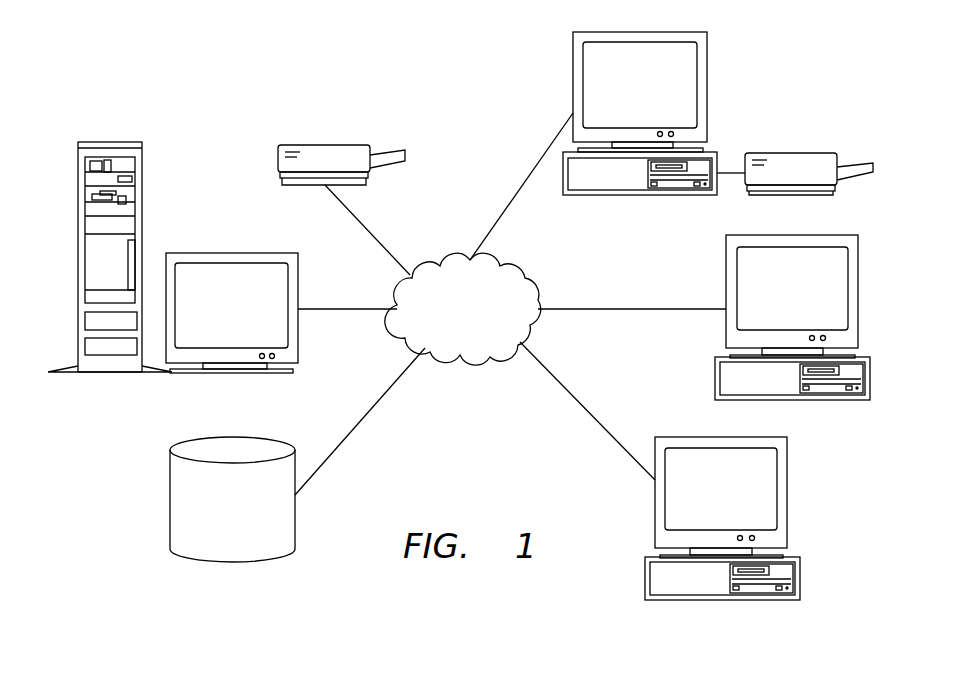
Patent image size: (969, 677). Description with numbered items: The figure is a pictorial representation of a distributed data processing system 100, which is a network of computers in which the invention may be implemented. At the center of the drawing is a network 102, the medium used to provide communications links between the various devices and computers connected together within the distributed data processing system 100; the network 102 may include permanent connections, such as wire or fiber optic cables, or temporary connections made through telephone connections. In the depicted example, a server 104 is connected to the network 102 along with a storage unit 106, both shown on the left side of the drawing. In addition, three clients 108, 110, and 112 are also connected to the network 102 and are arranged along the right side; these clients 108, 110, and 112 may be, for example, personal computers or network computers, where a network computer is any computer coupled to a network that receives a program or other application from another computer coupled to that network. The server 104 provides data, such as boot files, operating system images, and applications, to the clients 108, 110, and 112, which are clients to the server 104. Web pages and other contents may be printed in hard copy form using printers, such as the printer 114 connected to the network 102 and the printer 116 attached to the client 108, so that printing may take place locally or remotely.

The distributed data processing system 100 is at (447, 126).
The network 102 is at (447, 334).
The server 104 is at (213, 315).
The storage unit 106 is at (213, 537).
The client 108 is at (621, 97).
The client 110 is at (773, 302).
The client 112 is at (703, 502).
The printer 114 is at (278, 158).
The printer 116 is at (790, 153).